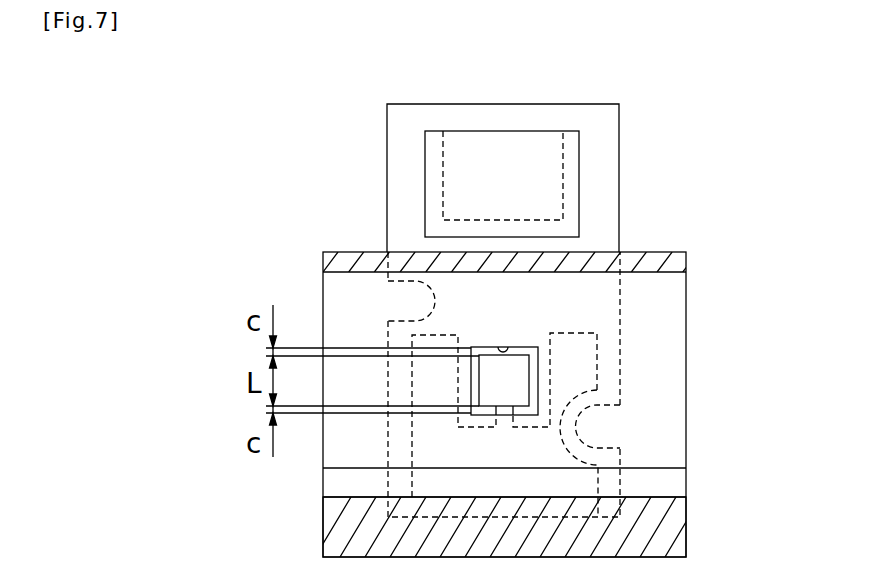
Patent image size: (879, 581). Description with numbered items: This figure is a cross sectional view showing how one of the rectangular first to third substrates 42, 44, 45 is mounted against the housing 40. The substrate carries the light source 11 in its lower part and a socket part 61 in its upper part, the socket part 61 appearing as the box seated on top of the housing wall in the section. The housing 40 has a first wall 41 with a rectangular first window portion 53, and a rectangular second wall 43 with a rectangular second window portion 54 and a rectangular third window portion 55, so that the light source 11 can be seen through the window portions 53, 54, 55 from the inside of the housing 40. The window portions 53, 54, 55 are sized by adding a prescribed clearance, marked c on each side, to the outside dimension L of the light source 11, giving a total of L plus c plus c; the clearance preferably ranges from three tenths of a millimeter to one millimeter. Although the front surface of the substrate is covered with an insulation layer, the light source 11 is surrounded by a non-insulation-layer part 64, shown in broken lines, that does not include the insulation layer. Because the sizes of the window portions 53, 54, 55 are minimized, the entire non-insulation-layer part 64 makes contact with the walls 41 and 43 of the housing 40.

The light source 11 is at (513, 382).
The housing 40 is at (677, 527).
The first wall 41 is at (561, 404).
The second wall 43 is at (660, 303).
The first substrate 42 is at (399, 149).
The second substrate 44 is at (399, 149).
The third substrate 45 is at (387, 95).
The first window portion 53 is at (531, 347).
The second window portion 54 is at (531, 347).
The third window portion 55 is at (503, 347).
The socket part 61 is at (545, 173).
The non-insulation-layer part 64 is at (430, 438).